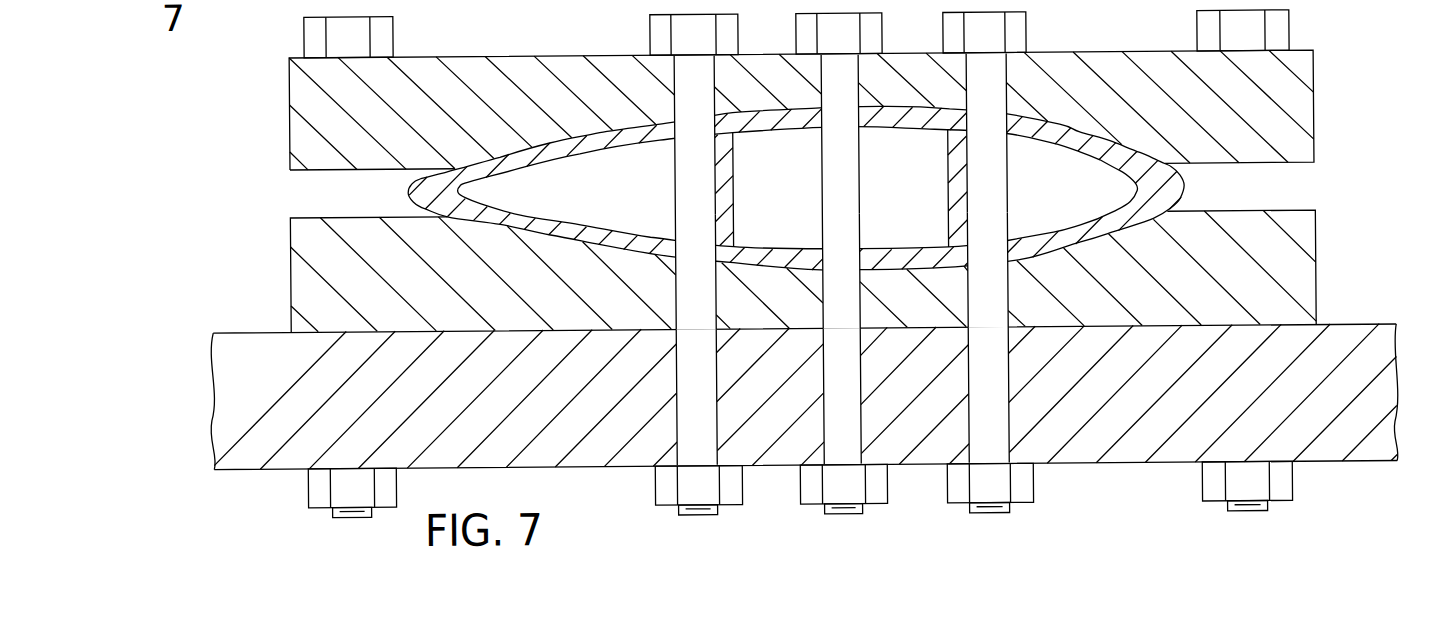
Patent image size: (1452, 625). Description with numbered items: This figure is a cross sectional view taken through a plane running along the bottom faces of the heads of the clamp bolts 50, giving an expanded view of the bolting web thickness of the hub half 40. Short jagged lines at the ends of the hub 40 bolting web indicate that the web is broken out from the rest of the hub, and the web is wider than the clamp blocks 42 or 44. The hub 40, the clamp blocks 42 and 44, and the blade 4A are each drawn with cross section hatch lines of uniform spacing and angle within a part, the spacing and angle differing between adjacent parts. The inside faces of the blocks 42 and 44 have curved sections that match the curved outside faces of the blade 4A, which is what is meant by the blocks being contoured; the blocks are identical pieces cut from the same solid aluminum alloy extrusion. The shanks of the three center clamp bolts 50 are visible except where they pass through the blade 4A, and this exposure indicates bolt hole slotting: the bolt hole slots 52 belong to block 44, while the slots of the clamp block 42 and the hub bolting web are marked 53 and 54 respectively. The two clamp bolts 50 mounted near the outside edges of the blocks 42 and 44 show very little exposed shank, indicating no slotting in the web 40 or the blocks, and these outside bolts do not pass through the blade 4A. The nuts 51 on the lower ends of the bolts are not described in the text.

The hub half 40 is at (1358, 331).
The clamp block 42 is at (290, 257).
The clamp block 44 is at (480, 0).
The blade 4A is at (1188, 196).
The clamp bolt 50 is at (304, 31).
The nut 51 is at (304, 503).
The bolt hole slot 52 is at (678, 102).
The bolt slot 53 is at (678, 316).
The bolt slot 54 is at (678, 417).